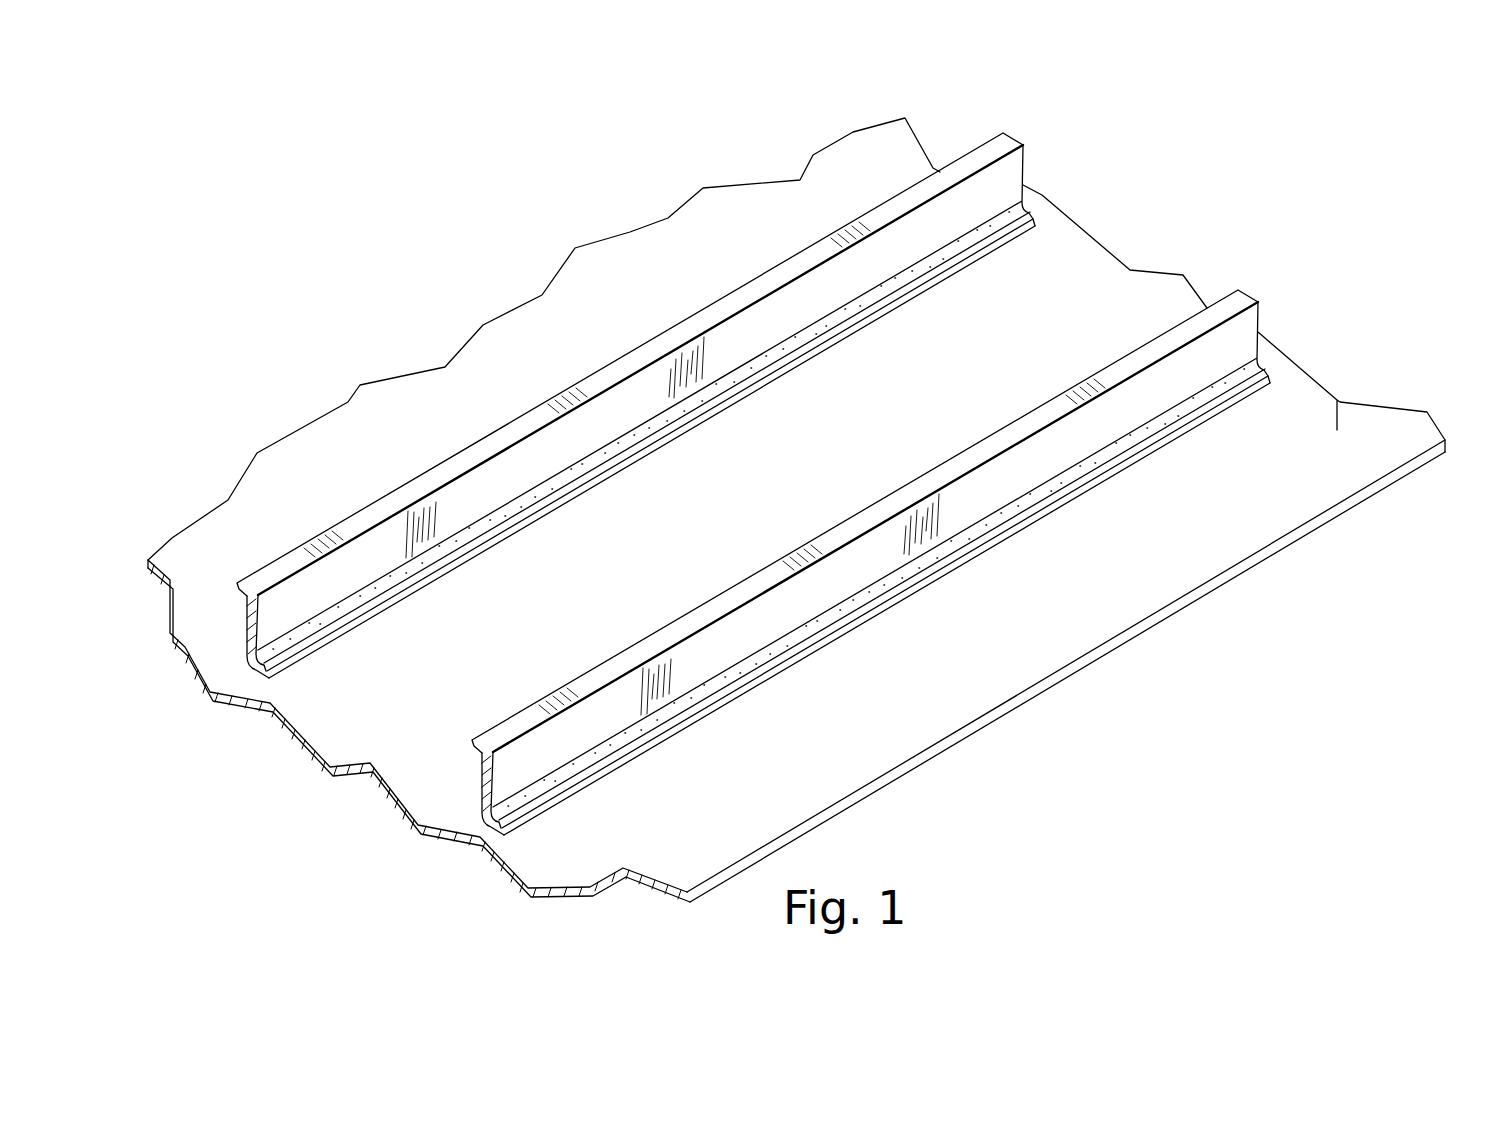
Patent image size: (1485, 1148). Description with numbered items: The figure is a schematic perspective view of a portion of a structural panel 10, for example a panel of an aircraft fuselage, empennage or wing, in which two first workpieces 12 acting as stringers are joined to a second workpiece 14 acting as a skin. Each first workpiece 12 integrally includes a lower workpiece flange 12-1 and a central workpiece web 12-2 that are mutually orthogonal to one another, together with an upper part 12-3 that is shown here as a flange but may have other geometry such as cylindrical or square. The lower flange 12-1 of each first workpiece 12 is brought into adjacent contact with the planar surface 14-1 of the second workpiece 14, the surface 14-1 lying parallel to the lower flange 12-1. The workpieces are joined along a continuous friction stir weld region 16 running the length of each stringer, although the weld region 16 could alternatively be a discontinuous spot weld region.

The panel 10 is at (1242, 130).
The first workpiece 12 is at (793, 484).
The lower workpiece flange 12-1 is at (466, 563).
The central workpiece web 12-2 is at (556, 472).
The upper part 12-3 is at (641, 353).
The second workpiece 14 is at (796, 510).
The planar surface 14-1 is at (1337, 400).
The friction stir weld region 16 is at (737, 379).